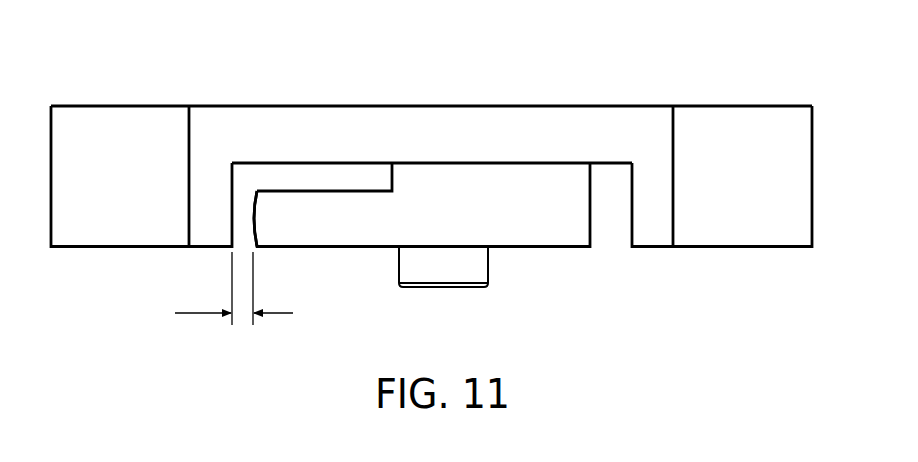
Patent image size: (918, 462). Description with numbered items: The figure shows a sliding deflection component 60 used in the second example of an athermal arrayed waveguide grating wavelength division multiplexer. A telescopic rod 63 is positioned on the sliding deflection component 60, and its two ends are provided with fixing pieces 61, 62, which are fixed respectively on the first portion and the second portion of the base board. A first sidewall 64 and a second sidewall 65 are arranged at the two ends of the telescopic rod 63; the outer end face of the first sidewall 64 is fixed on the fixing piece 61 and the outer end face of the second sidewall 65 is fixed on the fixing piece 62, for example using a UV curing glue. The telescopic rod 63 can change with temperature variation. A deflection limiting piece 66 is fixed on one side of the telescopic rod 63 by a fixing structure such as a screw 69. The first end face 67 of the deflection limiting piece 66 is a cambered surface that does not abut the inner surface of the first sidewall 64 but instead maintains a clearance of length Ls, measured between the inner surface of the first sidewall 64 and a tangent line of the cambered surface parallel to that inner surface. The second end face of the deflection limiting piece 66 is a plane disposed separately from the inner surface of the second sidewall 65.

The sliding deflection component 60 is at (739, 90).
The fixing piece 61 is at (134, 225).
The fixing piece 62 is at (747, 228).
The telescopic rod 63 is at (407, 128).
The first sidewall 64 is at (212, 225).
The second sidewall 65 is at (649, 228).
The deflection limiting piece 66 is at (508, 225).
The first end face 67 is at (253, 229).
The screw 69 is at (435, 271).
The clearance length Ls is at (234, 288).